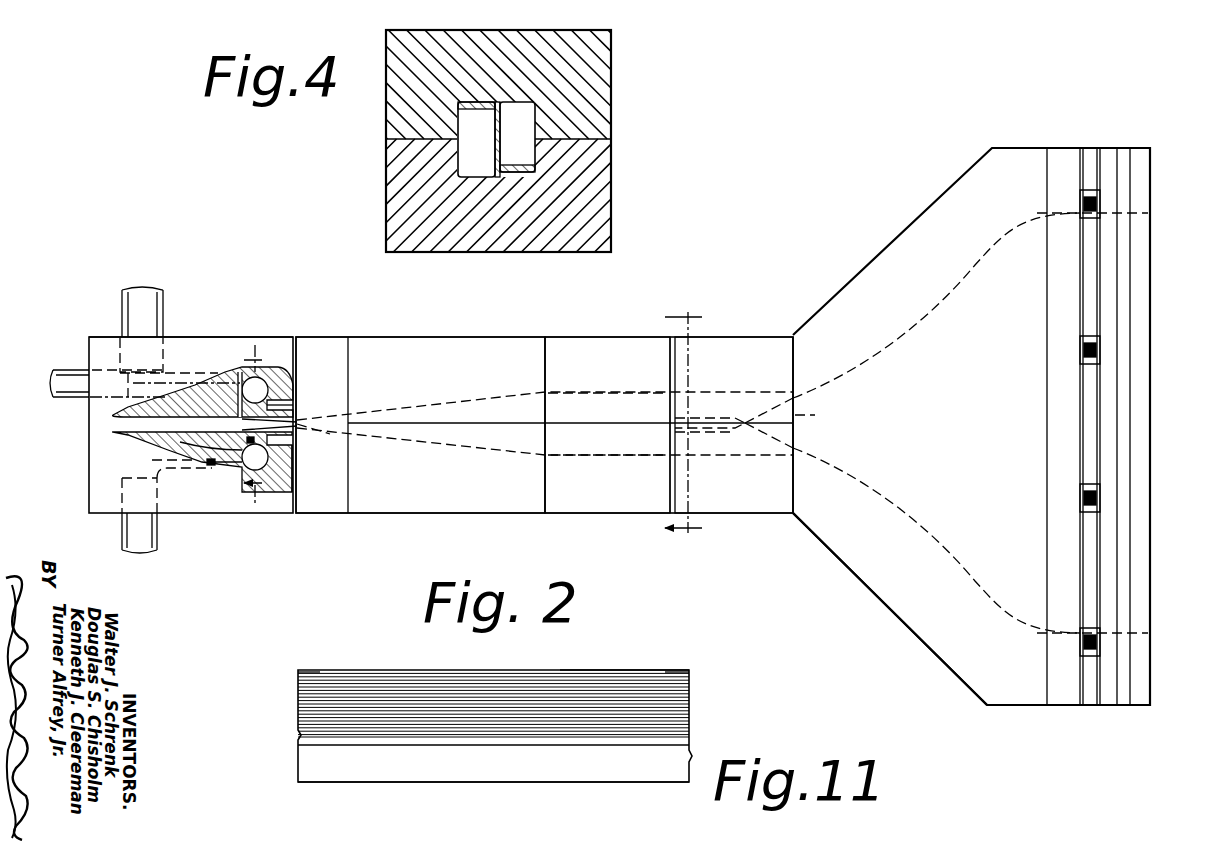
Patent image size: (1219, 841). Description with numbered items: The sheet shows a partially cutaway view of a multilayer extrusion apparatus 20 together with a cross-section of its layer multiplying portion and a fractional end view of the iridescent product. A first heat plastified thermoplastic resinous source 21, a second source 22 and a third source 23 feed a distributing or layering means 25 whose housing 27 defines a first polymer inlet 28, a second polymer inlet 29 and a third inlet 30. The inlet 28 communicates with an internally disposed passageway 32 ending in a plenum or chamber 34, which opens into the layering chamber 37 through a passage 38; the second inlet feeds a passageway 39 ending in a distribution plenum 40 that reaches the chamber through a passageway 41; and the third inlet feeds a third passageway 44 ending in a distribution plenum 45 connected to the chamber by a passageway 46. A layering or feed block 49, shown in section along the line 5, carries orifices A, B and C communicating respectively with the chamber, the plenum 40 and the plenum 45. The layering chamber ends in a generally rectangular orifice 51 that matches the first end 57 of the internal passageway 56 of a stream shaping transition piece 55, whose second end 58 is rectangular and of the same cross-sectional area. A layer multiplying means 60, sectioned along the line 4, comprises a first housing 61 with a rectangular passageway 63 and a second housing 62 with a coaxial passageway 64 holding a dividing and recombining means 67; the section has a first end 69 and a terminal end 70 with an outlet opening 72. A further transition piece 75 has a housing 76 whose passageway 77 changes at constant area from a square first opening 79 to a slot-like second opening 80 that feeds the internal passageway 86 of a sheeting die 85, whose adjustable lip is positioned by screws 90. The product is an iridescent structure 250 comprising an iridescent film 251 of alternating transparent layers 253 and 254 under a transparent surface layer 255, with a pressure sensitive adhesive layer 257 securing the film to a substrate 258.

In FIG. 2, the apparatus 20 is at (441, 329).
In FIG. 2, the first heat plastified thermoplastic resinous source 21 is at (128, 303).
In FIG. 2, the second heat plastified thermoplastic resinous source 22 is at (62, 373).
In FIG. 2, the third heat plastified thermoplastic resinous source 23 is at (160, 536).
In FIG. 2, the distributing or layering means 25 is at (281, 522).
In FIG. 2, the housing 27 is at (222, 337).
In FIG. 2, the first polymer inlet 28 is at (120, 337).
In FIG. 2, the second polymer inlet 29 is at (88, 399).
In FIG. 2, the third inlet 30 is at (118, 516).
In FIG. 2, the internally disposed passageway 32 is at (128, 424).
In FIG. 2, the plenum or chamber 34 is at (183, 426).
In FIG. 2, the layering chamber 37 is at (297, 409).
In FIG. 2, the passage 38 is at (213, 460).
In FIG. 2, the passageway 39 is at (232, 379).
In FIG. 2, the distribution plenum 40 is at (263, 378).
In FIG. 2, the passageway 41 is at (242, 373).
In FIG. 2, the third passageway 44 is at (230, 478).
In FIG. 2, the distribution plenum 45 is at (297, 457).
In FIG. 2, the passageway 46 is at (222, 467).
In FIG. 2, the layering or feed block 49 is at (221, 475).
In FIG. 2, the section line 4- 4 is at (678, 424).
In FIG. 2, the section line 5- 5 is at (250, 423).
In FIG. 2, the generally rectangular orifice 51 is at (300, 421).
In FIG. 2, the stream shaping housing or transition piece 55 is at (415, 500).
In FIG. 2, the internal passageway 56 is at (472, 410).
In FIG. 2, the first end 57 is at (330, 434).
In FIG. 2, the second end 58 is at (540, 440).
In FIG. 4, the layer multiplying means 60 is at (614, 112).
In FIG. 2, the layer multiplying means 60 is at (694, 299).
In FIG. 2, the first housing 61 is at (603, 336).
In FIG. 4, the second housing 62 is at (613, 72).
In FIG. 2, the second housing 62 is at (748, 336).
In FIG. 2, the internal passageway 63 is at (590, 398).
In FIG. 4, the internal passageway 64 is at (531, 138).
In FIG. 2, the internal passageway 64 is at (706, 398).
In FIG. 4, the dividing and recombining means 67 is at (494, 143).
In FIG. 2, the dividing and recombining means 67 is at (712, 442).
In FIG. 2, the first end 69 is at (546, 492).
In FIG. 2, the second or terminal end 70 is at (790, 498).
In FIG. 2, the outlet opening 72 is at (795, 378).
In FIG. 2, the stream shaping section or transition piece 75 is at (873, 604).
In FIG. 2, the housing 76 is at (955, 641).
In FIG. 2, the internal passageway 77 is at (890, 372).
In FIG. 2, the first opening 79 is at (815, 415).
In FIG. 2, the second end or opening 80 is at (1040, 622).
In FIG. 2, the sheeting die 85 is at (1063, 169).
In FIG. 2, the internal passageway 86 is at (1115, 238).
In FIG. 2, the screws 90 is at (1100, 204).
In FIG. 11, the iridescent structure 250 is at (343, 652).
In FIG. 11, the iridescent film 251 is at (284, 726).
In FIG. 11, the layers 253 is at (690, 696).
In FIG. 11, the layers 254 is at (298, 691).
In FIG. 11, the transparent surface layer 255 is at (609, 669).
In FIG. 11, the pressure sensitive adhesive layer 257 is at (305, 743).
In FIG. 11, the substrate 258 is at (300, 767).